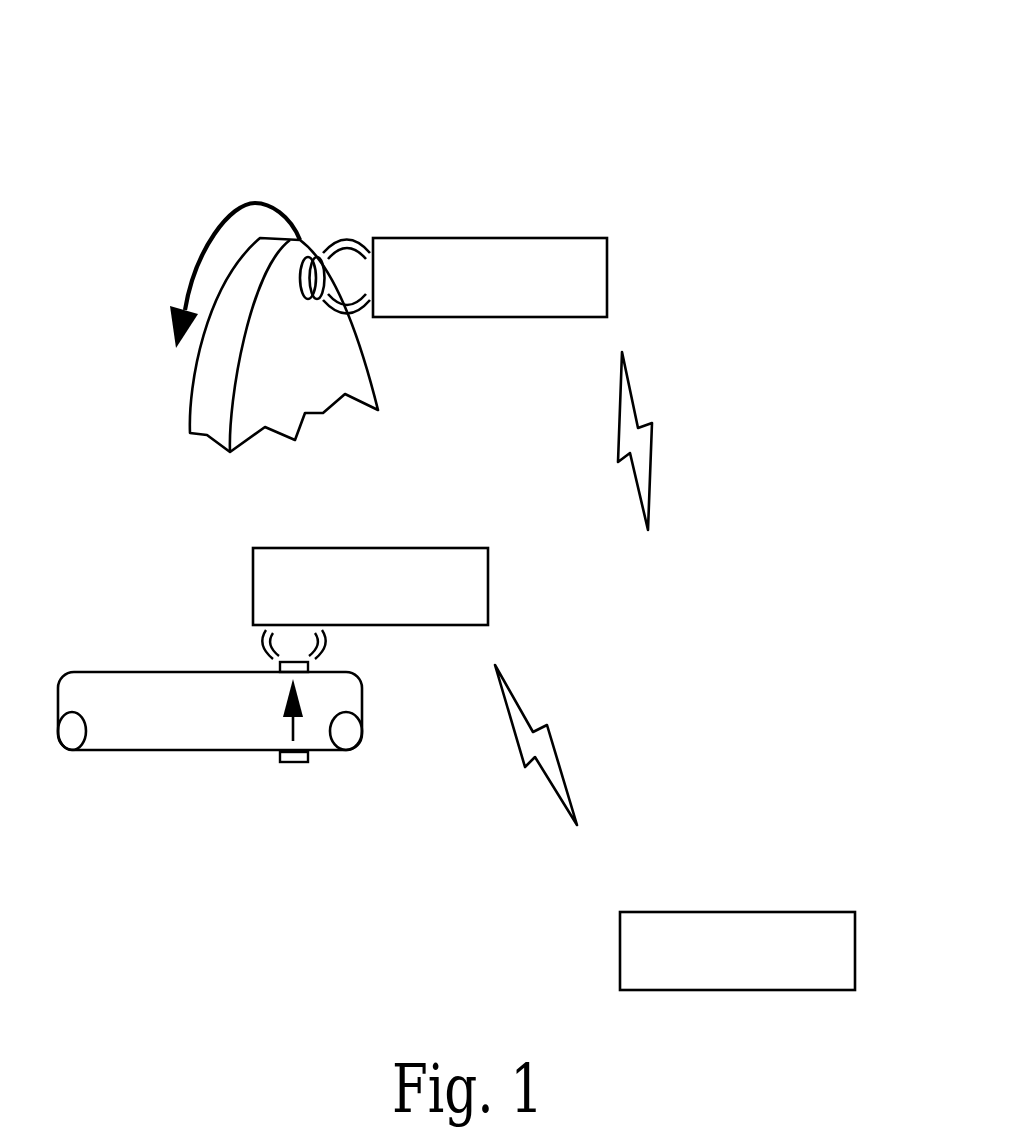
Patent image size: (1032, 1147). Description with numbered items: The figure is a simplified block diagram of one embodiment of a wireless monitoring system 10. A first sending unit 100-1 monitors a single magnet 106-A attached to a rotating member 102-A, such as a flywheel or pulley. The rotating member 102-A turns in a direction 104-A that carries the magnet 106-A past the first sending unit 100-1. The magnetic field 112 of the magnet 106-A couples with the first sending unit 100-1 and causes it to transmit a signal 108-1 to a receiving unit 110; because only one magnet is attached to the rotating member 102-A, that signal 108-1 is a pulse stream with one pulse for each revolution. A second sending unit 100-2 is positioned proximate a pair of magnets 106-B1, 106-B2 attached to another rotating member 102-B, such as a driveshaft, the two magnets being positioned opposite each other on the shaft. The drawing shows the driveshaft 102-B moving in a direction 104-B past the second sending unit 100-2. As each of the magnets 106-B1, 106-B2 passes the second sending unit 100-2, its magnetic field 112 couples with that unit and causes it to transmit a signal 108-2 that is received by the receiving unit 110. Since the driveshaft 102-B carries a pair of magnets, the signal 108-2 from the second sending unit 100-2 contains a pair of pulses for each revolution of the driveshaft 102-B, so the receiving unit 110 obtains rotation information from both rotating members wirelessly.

The wireless monitoring system 10 is at (832, 82).
The first sending unit 100-1 is at (607, 263).
The second sending unit 100-2 is at (253, 597).
The rotating member 102-A is at (317, 415).
The rotating member 102-B is at (153, 753).
The direction 104-A is at (224, 222).
The direction of motion 104-B is at (290, 733).
The magnet 106-A is at (318, 250).
The magnet 106-B1 is at (277, 663).
The magnet 106-B2 is at (290, 763).
The signal 108-1 is at (650, 493).
The signal 108-2 is at (563, 775).
The receiving unit 110 is at (620, 972).
The magnetic field 112 is at (345, 318).